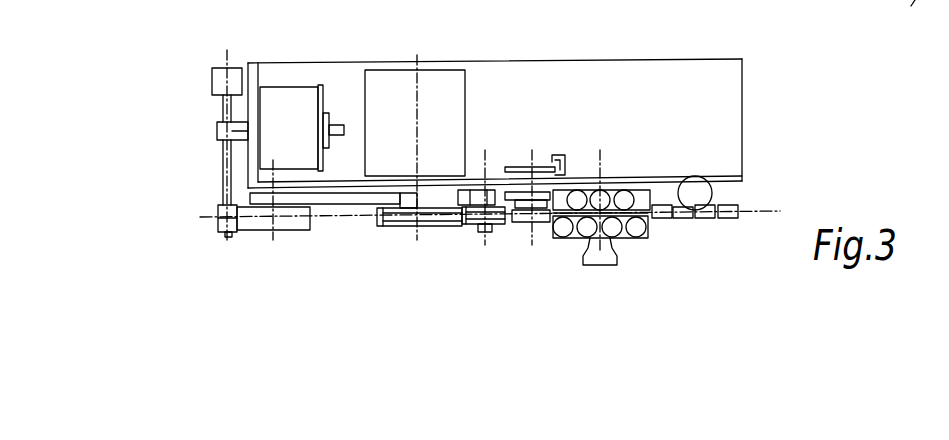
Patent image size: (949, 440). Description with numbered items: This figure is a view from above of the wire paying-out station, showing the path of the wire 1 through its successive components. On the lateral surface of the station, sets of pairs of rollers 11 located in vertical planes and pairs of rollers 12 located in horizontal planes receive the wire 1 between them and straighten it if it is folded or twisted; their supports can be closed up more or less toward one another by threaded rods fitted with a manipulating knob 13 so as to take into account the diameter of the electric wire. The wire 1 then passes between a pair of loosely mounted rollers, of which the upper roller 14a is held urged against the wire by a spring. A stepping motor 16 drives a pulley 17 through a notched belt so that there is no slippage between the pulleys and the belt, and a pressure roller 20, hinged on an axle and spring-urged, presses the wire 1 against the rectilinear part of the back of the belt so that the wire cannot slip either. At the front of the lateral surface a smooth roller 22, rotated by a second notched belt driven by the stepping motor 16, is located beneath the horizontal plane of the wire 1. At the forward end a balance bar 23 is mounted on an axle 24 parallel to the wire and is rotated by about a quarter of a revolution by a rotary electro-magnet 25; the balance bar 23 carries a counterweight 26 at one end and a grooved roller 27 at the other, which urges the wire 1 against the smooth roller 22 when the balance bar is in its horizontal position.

The wire 1 is at (349, 226).
The pairs of rollers located in vertical planes 11 is at (688, 220).
The pairs of rollers located in horizontal planes 12 is at (583, 240).
The manipulating knob 13 is at (608, 240).
The upper roller 14a is at (525, 216).
The stepping motor 16 is at (399, 80).
The pulley 17 is at (400, 220).
The pressure roller 20 is at (475, 222).
The smooth roller 22 is at (292, 222).
The balance bar 23 is at (222, 176).
The axle 24 is at (218, 130).
The rotary electro-magnet 25 is at (282, 100).
The counterweight 26 is at (222, 84).
The grooved roller 27 is at (218, 224).